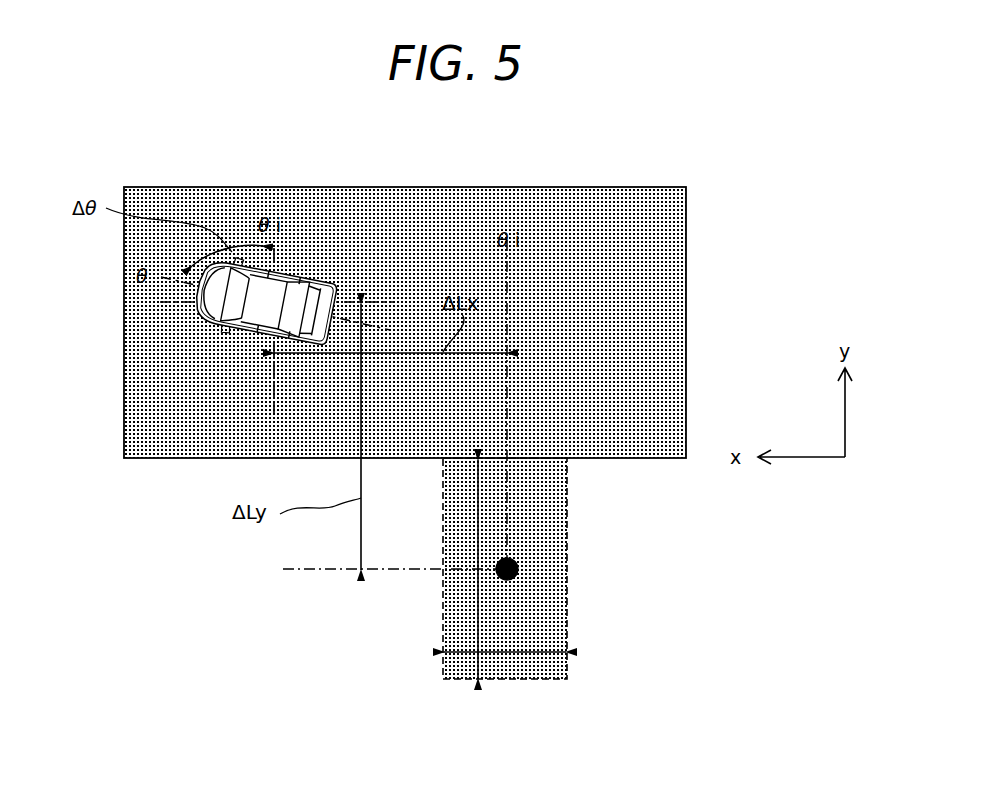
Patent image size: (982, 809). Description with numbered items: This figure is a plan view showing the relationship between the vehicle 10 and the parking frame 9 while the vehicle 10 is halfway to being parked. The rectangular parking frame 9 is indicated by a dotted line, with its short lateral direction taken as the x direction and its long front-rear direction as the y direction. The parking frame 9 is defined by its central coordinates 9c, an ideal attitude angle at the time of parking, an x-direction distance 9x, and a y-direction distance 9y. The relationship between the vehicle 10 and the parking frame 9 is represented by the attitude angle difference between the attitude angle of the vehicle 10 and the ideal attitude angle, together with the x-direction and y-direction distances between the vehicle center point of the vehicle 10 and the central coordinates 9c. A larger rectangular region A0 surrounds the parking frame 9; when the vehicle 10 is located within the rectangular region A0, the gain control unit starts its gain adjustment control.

The rectangular region A0 is at (670, 218).
The parking frame 9 is at (567, 500).
The central coordinates of the parking frame 9c is at (517, 576).
The x-direction distance of the parking frame 9x is at (515, 655).
The y-direction distance of the parking frame 9y is at (478, 604).
The vehicle 10 is at (198, 308).